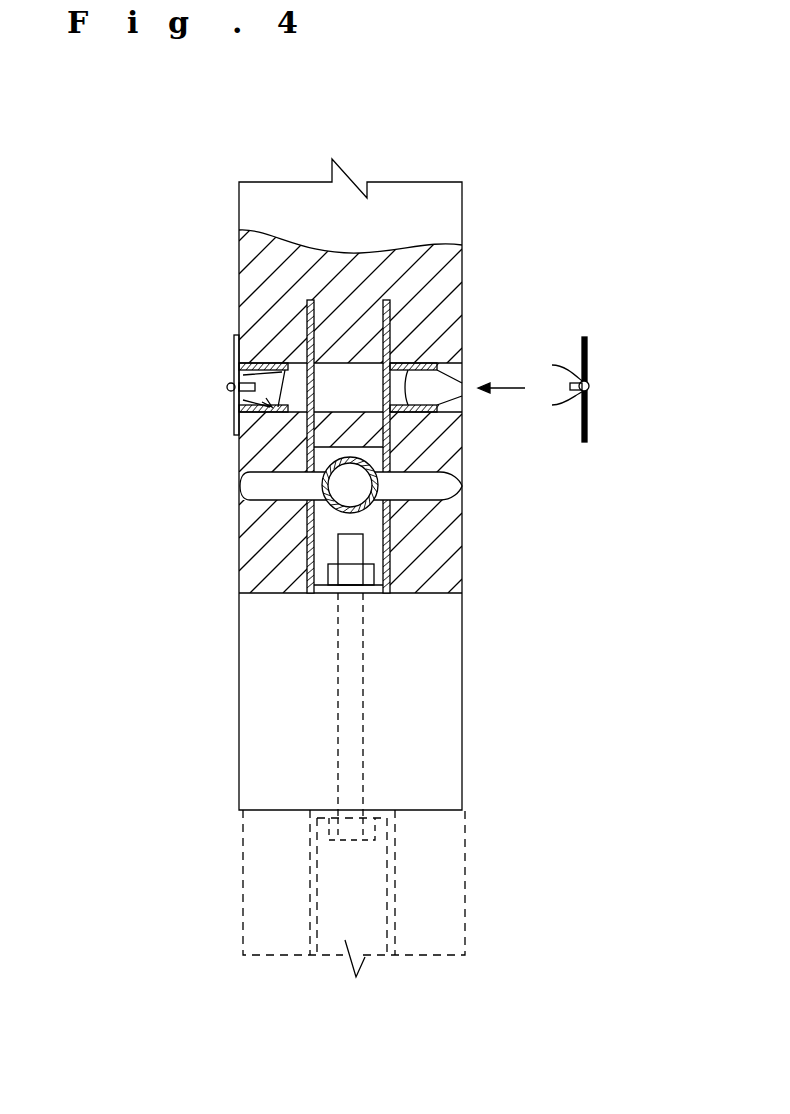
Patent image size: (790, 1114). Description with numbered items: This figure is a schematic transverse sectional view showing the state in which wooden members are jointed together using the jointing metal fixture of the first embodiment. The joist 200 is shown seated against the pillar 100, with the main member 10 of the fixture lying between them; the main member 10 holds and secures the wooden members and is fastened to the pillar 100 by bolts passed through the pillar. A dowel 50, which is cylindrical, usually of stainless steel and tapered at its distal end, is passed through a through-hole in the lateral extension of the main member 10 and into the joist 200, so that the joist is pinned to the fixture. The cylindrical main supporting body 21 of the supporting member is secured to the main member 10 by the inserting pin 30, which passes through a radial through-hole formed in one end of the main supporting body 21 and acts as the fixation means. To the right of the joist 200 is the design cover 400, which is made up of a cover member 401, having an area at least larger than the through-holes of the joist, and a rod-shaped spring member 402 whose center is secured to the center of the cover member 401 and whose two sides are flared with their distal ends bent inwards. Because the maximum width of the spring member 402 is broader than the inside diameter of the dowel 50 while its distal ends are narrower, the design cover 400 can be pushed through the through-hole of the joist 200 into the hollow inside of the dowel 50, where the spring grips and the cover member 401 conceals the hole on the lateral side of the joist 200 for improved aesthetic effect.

The joist 200 is at (437, 195).
The main member 10 is at (393, 563).
The dowel 50 is at (295, 365).
The inserting pin 30 is at (240, 487).
The main supporting body 21 is at (320, 506).
The pillar 100 is at (447, 695).
The design cover 400 is at (583, 379).
The cover member 401 is at (588, 433).
The rod-shaped spring member 402 is at (562, 408).